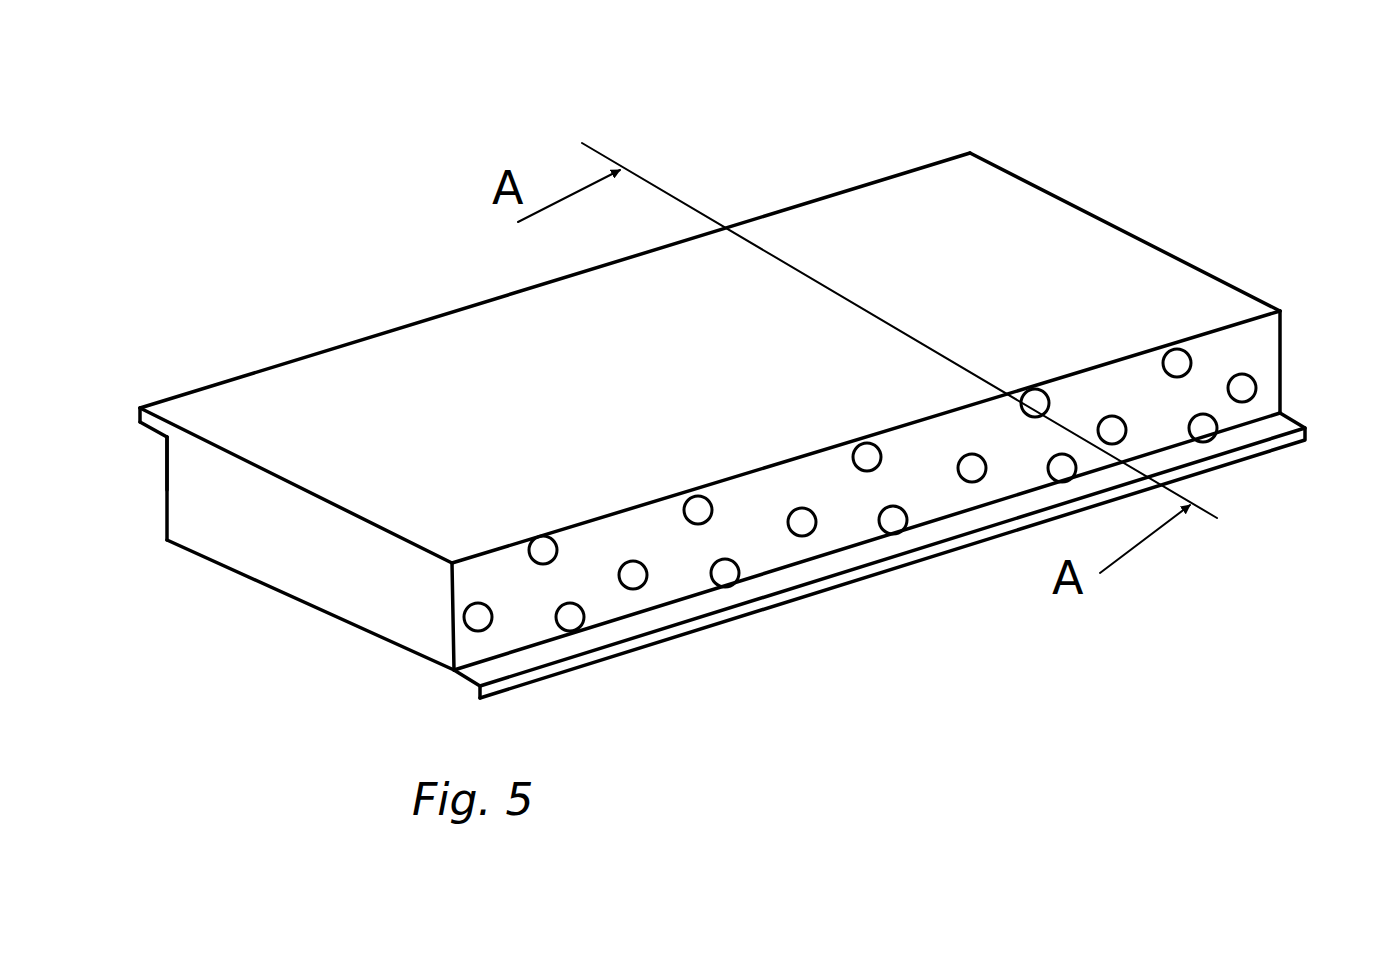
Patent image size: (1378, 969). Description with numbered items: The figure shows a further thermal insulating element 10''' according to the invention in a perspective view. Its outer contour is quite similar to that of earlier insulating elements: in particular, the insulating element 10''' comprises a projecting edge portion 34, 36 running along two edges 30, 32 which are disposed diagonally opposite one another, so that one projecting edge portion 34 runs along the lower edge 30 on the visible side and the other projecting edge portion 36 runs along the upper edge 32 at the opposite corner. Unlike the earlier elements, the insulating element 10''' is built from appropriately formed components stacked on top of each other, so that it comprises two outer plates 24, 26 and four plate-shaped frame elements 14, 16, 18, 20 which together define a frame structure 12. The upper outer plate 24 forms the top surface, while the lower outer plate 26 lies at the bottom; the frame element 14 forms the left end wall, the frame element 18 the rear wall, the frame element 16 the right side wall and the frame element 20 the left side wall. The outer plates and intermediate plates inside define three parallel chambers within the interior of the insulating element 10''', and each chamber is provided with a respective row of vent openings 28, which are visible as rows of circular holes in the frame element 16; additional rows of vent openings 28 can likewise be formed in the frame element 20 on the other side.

The insulating element 10''' is at (712, 437).
The frame structure 12 is at (1297, 363).
The frame element 14 is at (240, 530).
The frame element 16 is at (763, 552).
The frame element 18 is at (1097, 211).
The frame element 20 is at (167, 483).
The outer plate 24 is at (538, 412).
The outer plate 26 is at (455, 688).
The vent openings 28 is at (976, 481).
The edge 30 is at (623, 617).
The edge 32 is at (163, 438).
The projecting edge portion 34 is at (1267, 428).
The projecting edge portion 36 is at (150, 410).